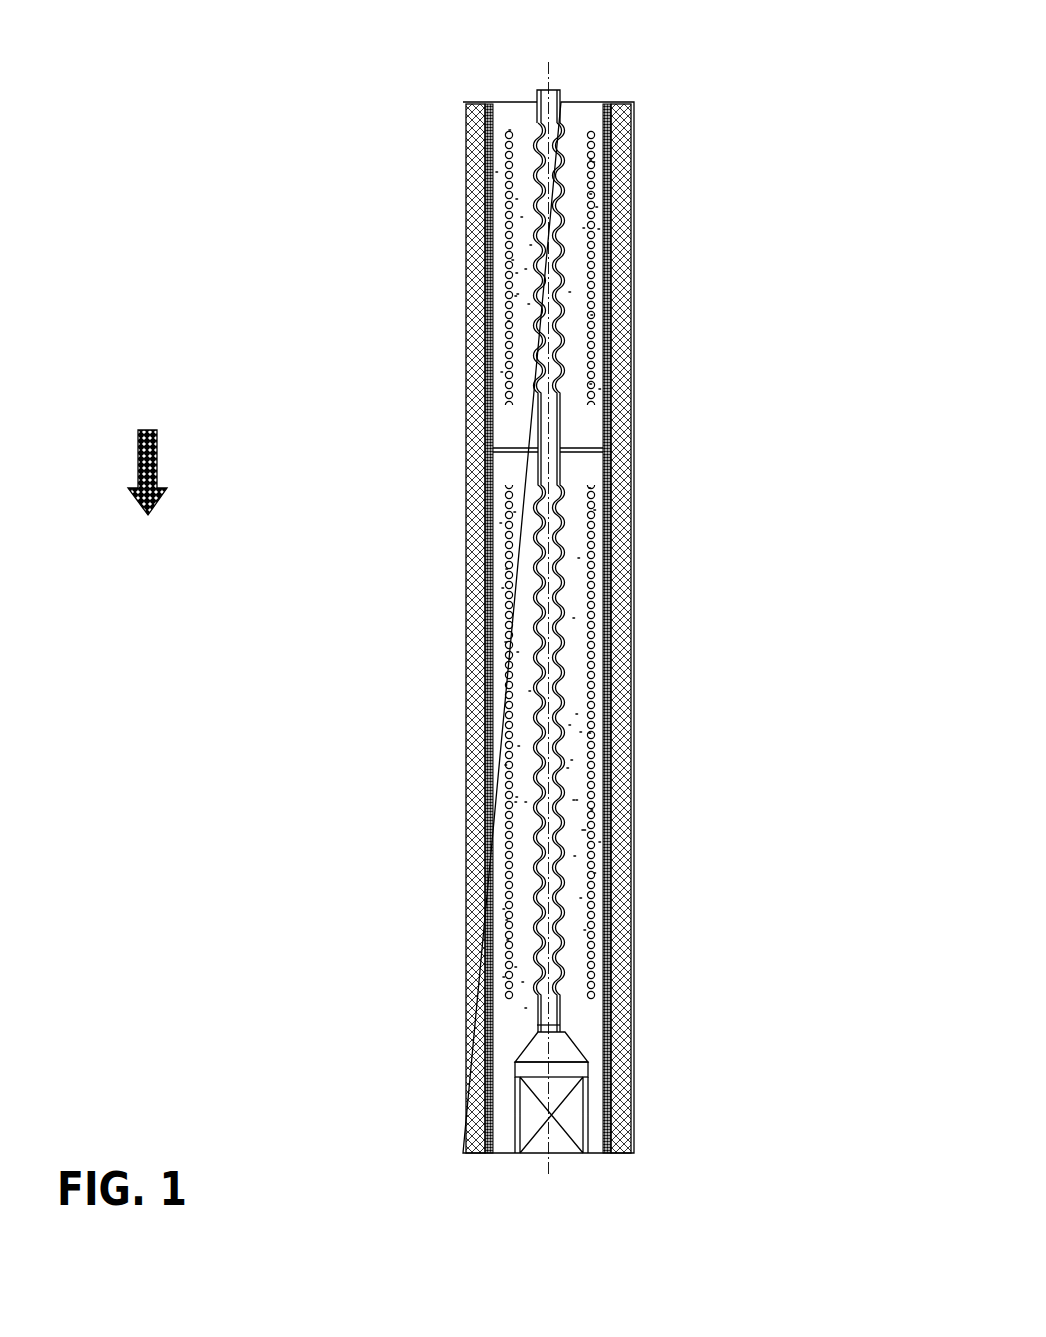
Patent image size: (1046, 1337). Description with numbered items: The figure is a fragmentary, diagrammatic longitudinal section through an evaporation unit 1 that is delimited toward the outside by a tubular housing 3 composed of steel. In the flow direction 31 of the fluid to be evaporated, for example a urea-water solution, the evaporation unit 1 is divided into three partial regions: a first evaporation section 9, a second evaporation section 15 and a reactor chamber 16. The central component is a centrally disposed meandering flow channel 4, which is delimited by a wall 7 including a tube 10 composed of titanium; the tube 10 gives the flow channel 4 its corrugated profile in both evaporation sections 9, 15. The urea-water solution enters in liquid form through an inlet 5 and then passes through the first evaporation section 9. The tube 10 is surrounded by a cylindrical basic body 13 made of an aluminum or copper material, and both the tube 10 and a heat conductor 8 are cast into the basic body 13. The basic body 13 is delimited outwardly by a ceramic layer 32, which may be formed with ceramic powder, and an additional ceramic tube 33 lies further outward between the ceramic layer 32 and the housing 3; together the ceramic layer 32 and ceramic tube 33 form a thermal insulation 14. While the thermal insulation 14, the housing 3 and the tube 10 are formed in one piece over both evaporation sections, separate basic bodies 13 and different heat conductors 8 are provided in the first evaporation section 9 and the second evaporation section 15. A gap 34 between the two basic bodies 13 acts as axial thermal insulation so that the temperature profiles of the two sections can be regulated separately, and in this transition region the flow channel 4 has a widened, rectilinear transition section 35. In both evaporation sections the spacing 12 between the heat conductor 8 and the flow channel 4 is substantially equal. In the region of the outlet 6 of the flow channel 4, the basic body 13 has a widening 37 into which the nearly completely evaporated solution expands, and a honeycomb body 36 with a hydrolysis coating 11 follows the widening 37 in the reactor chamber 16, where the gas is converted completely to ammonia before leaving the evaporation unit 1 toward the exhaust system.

The evaporation unit 1 is at (660, 92).
The tubular housing 3 is at (638, 175).
The meandering flow channel 4 is at (548, 172).
The inlet 5 is at (537, 100).
The outlet 6 is at (540, 1025).
The wall 7 is at (558, 645).
The heat conductor 8 is at (590, 368).
The first evaporation section 9 is at (288, 100).
The tube 10 is at (560, 617).
The hydrolysis coating 11 is at (582, 1140).
The spacing 12 is at (588, 975).
The basic body 13 is at (530, 283).
The thermal insulation 14 is at (661, 628).
The second evaporation section 15 is at (295, 460).
The reactor chamber 16 is at (295, 1032).
The flow direction 31 is at (148, 432).
The ceramic layer 32 is at (610, 335).
The ceramic tube 33 is at (620, 289).
The gap 34 is at (485, 450).
The transition section 35 is at (540, 464).
The honeycomb body 36 is at (570, 1118).
The widening 37 is at (538, 1045).